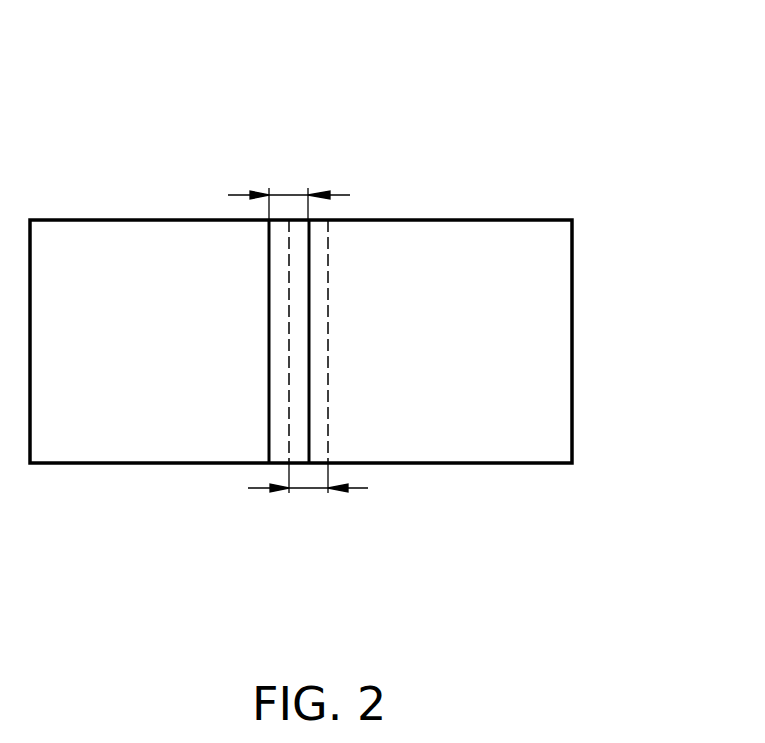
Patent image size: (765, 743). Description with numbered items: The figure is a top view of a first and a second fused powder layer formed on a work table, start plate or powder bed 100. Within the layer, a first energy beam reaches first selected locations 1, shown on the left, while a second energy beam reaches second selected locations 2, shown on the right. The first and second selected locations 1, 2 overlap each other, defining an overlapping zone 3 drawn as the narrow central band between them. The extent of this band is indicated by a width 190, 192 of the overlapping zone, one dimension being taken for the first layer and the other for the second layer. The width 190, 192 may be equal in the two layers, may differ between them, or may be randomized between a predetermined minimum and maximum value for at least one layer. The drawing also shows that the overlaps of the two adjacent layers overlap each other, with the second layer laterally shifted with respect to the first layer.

The powder bed 100 is at (565, 90).
The first selected locations 1 is at (149, 341).
The second selected locations 2 is at (440, 341).
The overlapping zone 3 is at (298, 341).
The width of the overlapping zone 190 is at (305, 489).
The width of the overlapping zone 192 is at (288, 195).